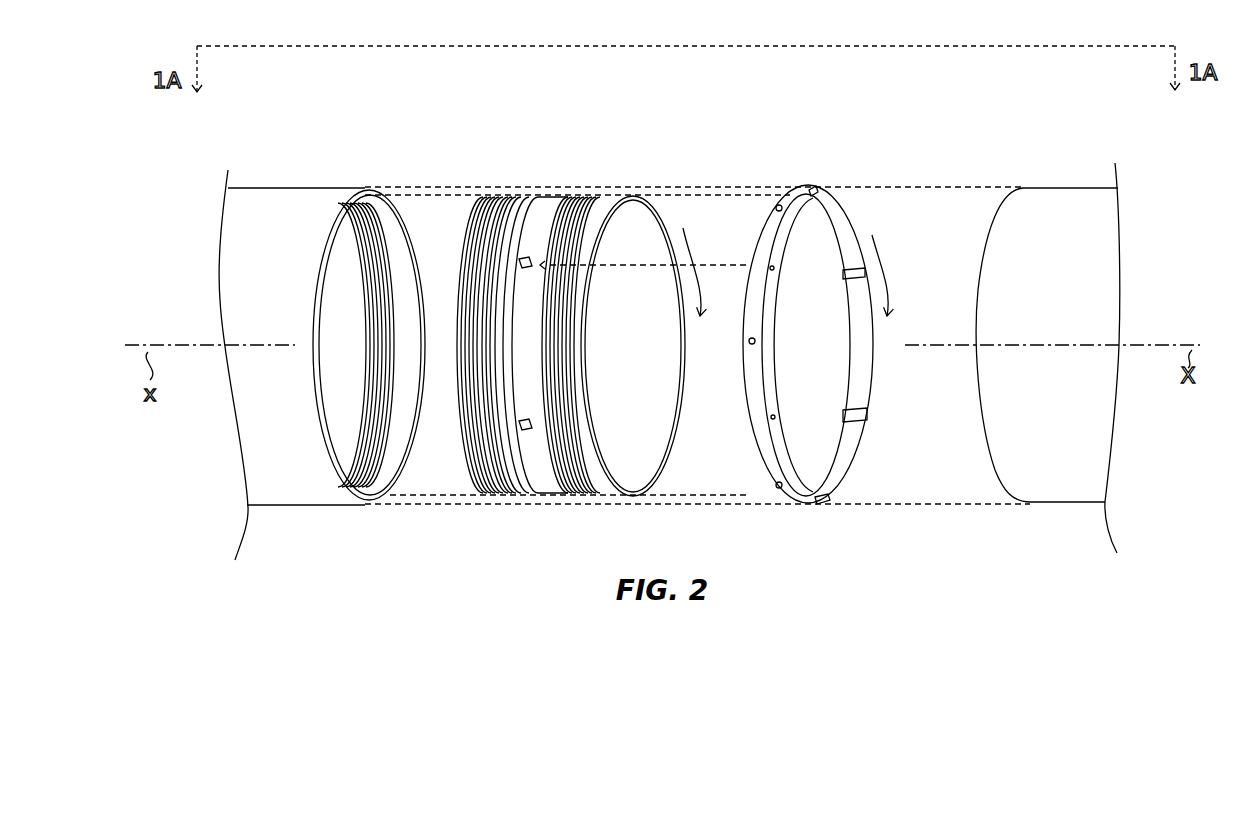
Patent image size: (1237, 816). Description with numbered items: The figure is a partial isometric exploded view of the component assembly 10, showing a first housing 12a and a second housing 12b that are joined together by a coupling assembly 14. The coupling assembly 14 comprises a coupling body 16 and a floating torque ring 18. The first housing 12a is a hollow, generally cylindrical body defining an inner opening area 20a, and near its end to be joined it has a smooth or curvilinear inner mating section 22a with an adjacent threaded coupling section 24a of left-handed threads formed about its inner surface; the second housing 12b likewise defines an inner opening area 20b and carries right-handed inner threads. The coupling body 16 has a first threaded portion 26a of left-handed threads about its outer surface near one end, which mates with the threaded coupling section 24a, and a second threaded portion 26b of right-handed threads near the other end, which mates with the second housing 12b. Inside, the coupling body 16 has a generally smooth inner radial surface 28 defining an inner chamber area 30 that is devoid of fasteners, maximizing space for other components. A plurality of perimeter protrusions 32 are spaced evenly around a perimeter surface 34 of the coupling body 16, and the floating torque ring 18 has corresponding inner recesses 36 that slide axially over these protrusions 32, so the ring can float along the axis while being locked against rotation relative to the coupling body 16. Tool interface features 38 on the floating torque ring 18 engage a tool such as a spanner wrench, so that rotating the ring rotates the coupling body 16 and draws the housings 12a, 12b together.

The component assembly 10 is at (453, 104).
The first housing 12a is at (232, 292).
The second housing 12b is at (1105, 213).
The coupling assembly 14 is at (597, 335).
The coupling body 16 is at (655, 450).
The floating torque ring 18 is at (821, 347).
The inner opening area 20a is at (357, 347).
The inner opening area 20b is at (976, 224).
The inner mating section 22a is at (387, 470).
The threaded coupling section 24a is at (358, 448).
The first threaded portion 26a is at (493, 473).
The second threaded portion 26b is at (600, 493).
The inner radial surface 28 is at (647, 408).
The inner chamber area 30 is at (652, 470).
The perimeter protrusions 32 is at (519, 265).
The perimeter surface 34 is at (537, 222).
The inner recesses 36 is at (813, 188).
The tool interface features 38 is at (776, 208).